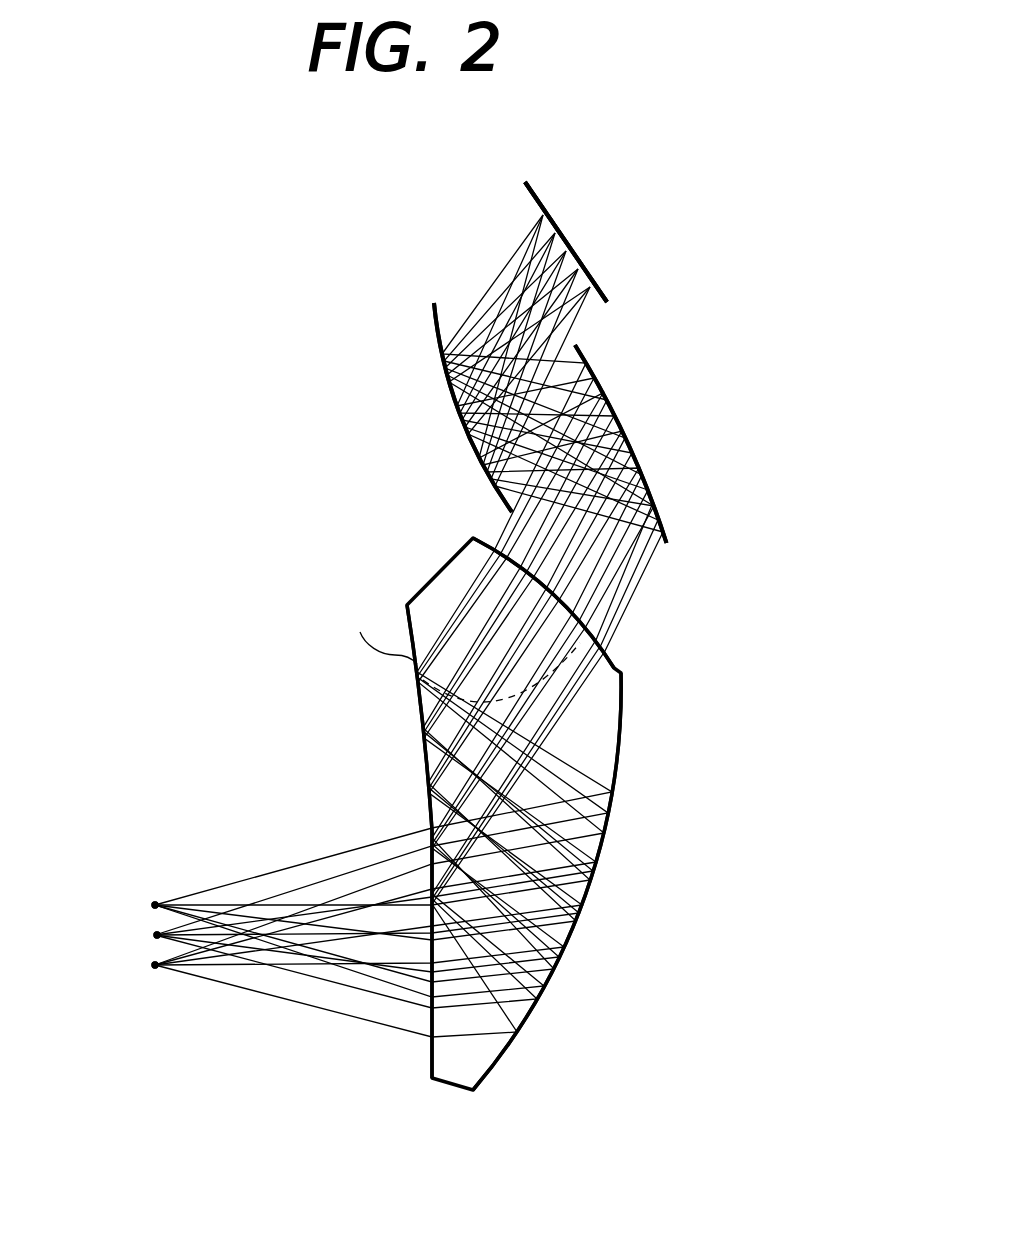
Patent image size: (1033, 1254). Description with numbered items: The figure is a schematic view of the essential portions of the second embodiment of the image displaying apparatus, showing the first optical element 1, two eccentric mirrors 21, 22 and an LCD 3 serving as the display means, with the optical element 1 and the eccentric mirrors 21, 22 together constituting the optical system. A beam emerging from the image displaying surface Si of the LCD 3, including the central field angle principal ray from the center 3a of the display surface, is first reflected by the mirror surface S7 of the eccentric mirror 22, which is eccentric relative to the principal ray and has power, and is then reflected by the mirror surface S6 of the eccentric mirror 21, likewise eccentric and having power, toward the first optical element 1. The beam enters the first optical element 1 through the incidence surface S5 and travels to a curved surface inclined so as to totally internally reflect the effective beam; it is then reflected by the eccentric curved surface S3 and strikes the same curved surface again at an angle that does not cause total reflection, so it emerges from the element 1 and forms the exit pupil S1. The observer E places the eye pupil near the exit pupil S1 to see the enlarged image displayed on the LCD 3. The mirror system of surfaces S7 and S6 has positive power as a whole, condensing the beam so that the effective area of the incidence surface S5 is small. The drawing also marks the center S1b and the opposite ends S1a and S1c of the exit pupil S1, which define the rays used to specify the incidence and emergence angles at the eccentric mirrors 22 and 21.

The first optical element 1 is at (583, 750).
The LCD 3 is at (527, 181).
The center of the display surface 3a is at (572, 252).
The image displaying surface Si is at (566, 242).
The eccentric mirror 21 is at (584, 361).
The eccentric mirror 22 is at (434, 304).
The exit pupil S1 is at (155, 904).
The end of the exit pupil S1a is at (150, 907).
The center of the exit pupil S1b is at (154, 935).
The end of the exit pupil S1c is at (150, 967).
The surface S3 is at (570, 937).
The incidence surface S5 is at (607, 651).
The mirror surface S6 is at (622, 433).
The mirror surface S7 is at (458, 406).
The observer E is at (152, 1000).